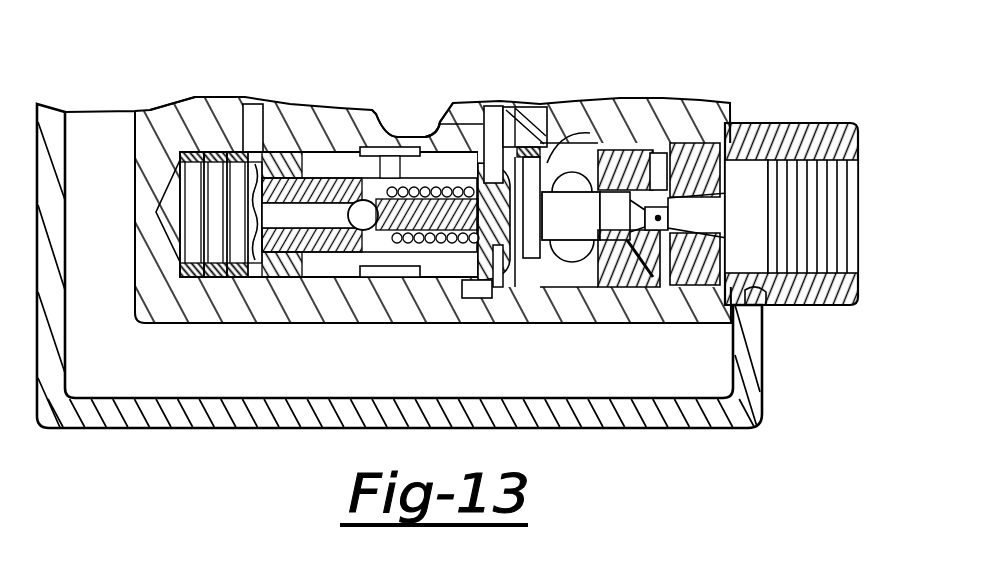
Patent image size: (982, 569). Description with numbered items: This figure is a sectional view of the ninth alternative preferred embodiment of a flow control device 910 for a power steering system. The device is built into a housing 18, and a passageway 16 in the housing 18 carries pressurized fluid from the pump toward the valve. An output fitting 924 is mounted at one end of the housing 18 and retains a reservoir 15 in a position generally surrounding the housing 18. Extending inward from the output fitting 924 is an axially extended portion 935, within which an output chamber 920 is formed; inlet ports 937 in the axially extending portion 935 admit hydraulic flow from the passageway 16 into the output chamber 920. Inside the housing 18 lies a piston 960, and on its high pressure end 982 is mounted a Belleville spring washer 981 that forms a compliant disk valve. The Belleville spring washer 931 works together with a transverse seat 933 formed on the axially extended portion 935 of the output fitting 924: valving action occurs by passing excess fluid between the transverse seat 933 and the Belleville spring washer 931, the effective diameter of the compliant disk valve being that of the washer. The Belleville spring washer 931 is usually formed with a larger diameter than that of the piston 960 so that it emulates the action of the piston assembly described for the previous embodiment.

The reservoir 15 is at (268, 383).
The passageway 16 is at (576, 124).
The housing 18 is at (195, 96).
The flow control device 910 is at (410, 112).
The output chamber 920 is at (573, 125).
The output fitting 924 is at (868, 42).
The Belleville spring washer 931 is at (548, 270).
The transverse seat 933 is at (562, 285).
The axially extended portion 935 is at (627, 303).
The inlet ports 937 is at (623, 118).
The piston 960 is at (450, 292).
The Belleville spring washer 981 is at (486, 106).
The high pressure end 982 is at (495, 292).